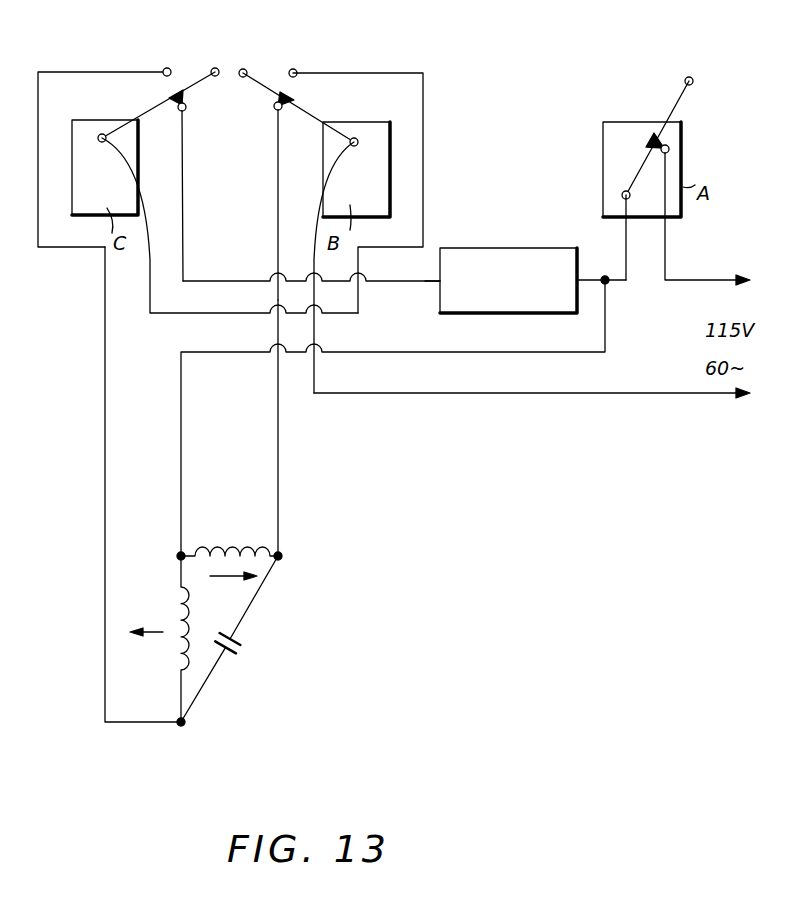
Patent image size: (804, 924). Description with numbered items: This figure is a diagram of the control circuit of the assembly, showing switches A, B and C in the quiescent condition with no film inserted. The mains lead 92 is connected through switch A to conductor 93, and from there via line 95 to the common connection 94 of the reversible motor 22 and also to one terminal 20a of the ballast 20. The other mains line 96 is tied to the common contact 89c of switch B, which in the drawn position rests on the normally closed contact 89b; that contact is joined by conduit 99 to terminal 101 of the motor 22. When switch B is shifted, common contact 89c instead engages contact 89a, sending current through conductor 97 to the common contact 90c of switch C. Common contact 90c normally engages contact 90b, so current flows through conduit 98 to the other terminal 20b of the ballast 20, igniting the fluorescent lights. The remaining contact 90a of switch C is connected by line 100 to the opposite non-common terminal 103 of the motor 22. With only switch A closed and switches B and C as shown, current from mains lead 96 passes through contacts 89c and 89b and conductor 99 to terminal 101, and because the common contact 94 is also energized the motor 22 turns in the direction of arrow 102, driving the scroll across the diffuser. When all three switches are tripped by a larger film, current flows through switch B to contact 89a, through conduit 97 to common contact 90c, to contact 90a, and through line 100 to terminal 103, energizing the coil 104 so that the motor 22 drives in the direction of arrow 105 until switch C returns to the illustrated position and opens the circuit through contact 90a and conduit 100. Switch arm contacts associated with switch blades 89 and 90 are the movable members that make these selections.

The ballast 20 is at (510, 249).
The terminal of the ballast 20a is at (583, 274).
The other terminal of the ballast 20b is at (438, 288).
The motor 22 is at (246, 657).
The switch blade 89 is at (245, 69).
The contact 89a is at (294, 69).
The contact 89b is at (275, 110).
The common contact 89c is at (307, 114).
The switch blade 90 is at (215, 68).
The contact 90a is at (167, 68).
The contact 90b is at (184, 111).
The common contact 90c is at (100, 134).
The mains lead 92 is at (716, 269).
The conductor 93 is at (625, 282).
The common connection of motor 94 is at (185, 553).
The line 95 is at (490, 350).
The line of the mains 96 is at (508, 392).
The conductor 97 is at (423, 171).
The conduit 98 is at (247, 279).
The conduit 99 is at (284, 506).
The line 100 is at (105, 421).
The terminal of the motor 101 is at (281, 560).
The arrow 102 is at (223, 577).
The terminal of the motor 103 is at (188, 722).
The coil of the motor 104 is at (175, 645).
The arrow 105 is at (147, 633).